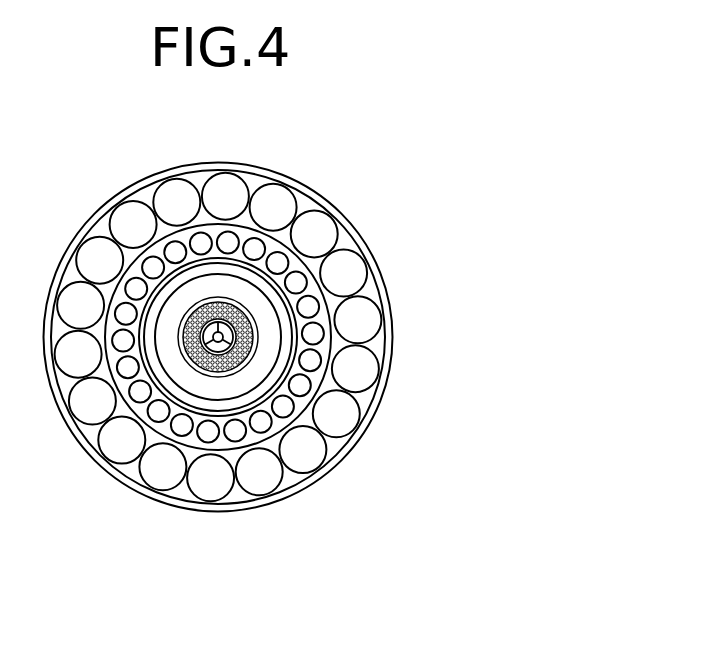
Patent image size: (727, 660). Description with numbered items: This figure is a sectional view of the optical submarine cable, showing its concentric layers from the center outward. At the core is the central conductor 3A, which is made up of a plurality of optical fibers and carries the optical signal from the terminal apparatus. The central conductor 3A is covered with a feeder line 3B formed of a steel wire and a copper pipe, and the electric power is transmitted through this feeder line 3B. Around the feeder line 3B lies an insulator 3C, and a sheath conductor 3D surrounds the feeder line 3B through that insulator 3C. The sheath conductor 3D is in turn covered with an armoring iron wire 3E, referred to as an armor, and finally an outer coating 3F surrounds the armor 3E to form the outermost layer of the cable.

The central conductor 3A is at (222, 318).
The feeder line 3B is at (262, 335).
The insulator 3C is at (287, 357).
The sheath conductor 3D is at (305, 351).
The armoring iron wire 3E is at (343, 413).
The outer coating 3F is at (305, 490).